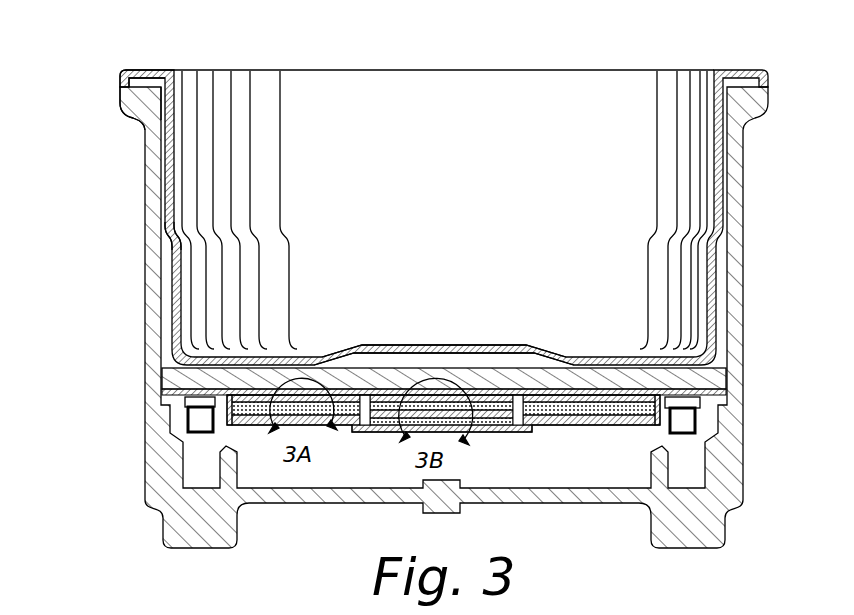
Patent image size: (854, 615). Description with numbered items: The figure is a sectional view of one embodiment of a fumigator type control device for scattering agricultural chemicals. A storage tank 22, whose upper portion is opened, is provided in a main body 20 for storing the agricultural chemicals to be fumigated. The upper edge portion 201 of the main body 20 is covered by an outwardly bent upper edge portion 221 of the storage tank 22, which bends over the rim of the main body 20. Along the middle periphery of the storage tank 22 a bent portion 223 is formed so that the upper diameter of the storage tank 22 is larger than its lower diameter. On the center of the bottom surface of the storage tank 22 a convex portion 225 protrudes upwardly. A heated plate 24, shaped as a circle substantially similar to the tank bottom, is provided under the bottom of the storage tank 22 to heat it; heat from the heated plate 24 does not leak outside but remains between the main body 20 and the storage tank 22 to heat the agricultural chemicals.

The main body 20 is at (145, 195).
The upper edge portion of the main body 201 is at (124, 101).
The storage tank 22 is at (120, 73).
The outwardly bent upper edge portion of the storage tank 221 is at (153, 68).
The bent portion 223 is at (175, 243).
The convex portion 225 is at (446, 343).
The heated plate 24 is at (162, 382).